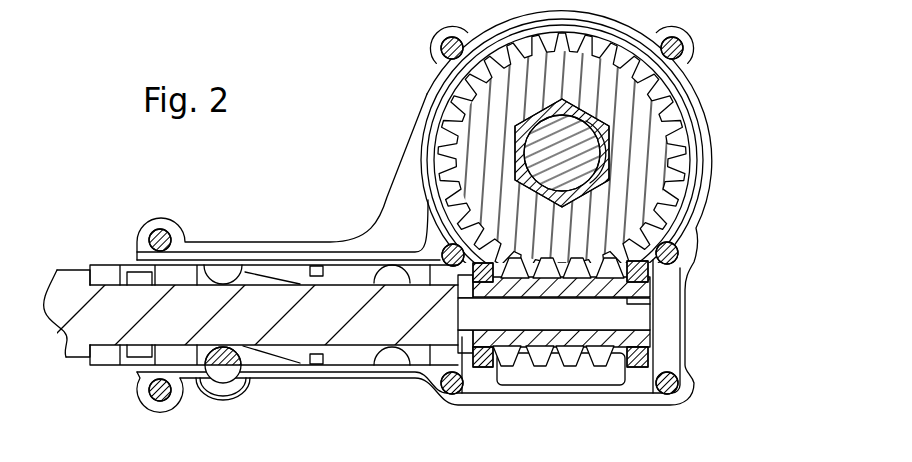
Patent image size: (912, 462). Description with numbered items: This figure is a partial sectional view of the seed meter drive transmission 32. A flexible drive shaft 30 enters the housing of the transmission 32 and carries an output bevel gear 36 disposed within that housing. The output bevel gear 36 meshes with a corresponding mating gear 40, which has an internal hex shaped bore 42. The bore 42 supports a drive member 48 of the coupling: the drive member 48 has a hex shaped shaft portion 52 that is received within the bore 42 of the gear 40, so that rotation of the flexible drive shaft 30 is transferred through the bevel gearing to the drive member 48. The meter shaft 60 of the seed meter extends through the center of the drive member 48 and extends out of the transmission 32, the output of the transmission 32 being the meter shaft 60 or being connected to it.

The flexible drive shaft 30 is at (74, 270).
The transmission 32 is at (713, 172).
The output bevel gear 36 is at (588, 368).
The mating gear 40 is at (670, 127).
The internal hex shaped bore 42 is at (612, 138).
The drive member 48 is at (464, 368).
The hex shaped shaft portion 52 is at (523, 119).
The meter shaft 60 is at (602, 201).